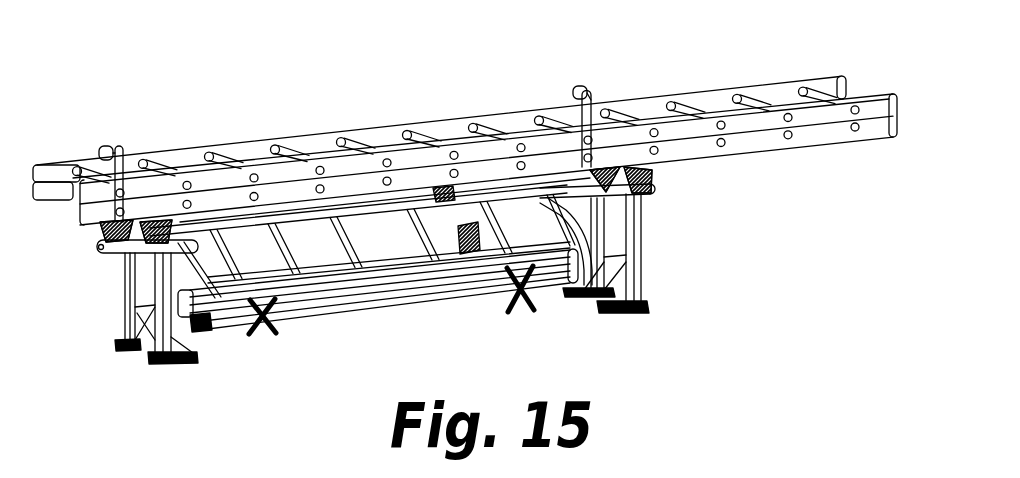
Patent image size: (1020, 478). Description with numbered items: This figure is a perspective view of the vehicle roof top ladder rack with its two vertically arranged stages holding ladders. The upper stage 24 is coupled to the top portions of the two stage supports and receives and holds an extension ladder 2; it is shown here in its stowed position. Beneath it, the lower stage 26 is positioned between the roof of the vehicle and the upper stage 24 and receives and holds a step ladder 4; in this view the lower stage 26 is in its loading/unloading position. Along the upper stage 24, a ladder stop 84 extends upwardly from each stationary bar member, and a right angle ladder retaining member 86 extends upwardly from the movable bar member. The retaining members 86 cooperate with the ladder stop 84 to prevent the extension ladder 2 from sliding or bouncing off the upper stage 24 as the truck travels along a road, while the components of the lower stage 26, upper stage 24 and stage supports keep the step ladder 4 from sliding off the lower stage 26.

The extension ladder 2 is at (708, 100).
The step ladder 4 is at (403, 280).
The upper stage 24 is at (686, 190).
The lower stage 26 is at (326, 336).
The ladder stop 84 is at (101, 152).
The right angle ladder retaining member 86 is at (122, 147).